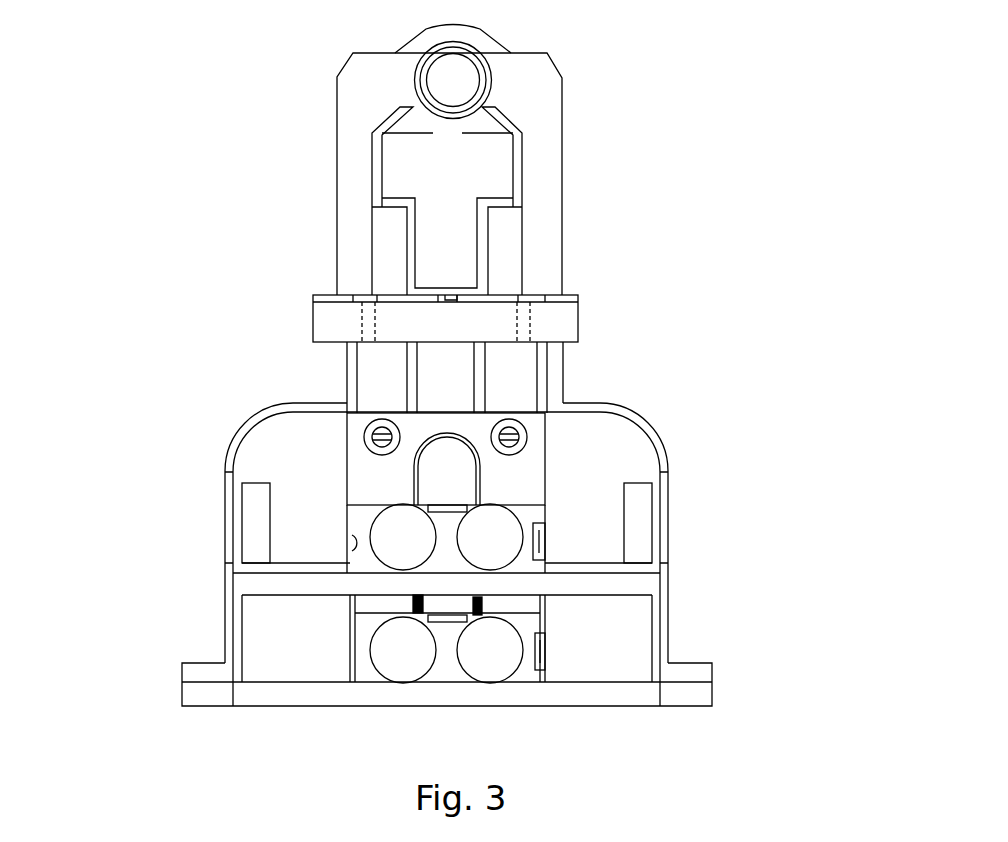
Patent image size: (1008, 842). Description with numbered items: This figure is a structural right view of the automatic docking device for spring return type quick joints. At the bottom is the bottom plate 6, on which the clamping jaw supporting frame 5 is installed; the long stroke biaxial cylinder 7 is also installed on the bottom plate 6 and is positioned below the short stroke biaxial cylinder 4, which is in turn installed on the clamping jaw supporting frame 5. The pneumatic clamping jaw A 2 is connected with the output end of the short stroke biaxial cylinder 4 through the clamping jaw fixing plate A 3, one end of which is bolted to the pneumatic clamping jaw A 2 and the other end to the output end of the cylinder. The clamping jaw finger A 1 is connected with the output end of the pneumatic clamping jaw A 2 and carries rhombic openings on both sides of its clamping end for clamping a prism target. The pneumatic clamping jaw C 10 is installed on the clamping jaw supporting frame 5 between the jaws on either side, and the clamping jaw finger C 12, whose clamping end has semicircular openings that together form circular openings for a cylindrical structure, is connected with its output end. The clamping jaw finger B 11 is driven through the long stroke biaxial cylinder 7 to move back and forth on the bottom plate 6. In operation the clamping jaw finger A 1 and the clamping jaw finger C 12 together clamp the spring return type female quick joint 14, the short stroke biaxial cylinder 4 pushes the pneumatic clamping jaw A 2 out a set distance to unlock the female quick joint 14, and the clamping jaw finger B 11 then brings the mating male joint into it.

The clamping jaw finger A 1 is at (535, 123).
The pneumatic clamping jaw A 2 is at (480, 316).
The clamping jaw fixing plate A 3 is at (500, 473).
The short stroke biaxial cylinder 4 is at (485, 551).
The clamping jaw supporting frame 5 is at (577, 585).
The bottom plate 6 is at (588, 694).
The long stroke biaxial cylinder 7 is at (405, 650).
The pneumatic clamping jaw C 10 is at (482, 272).
The clamping jaw finger B 11 is at (350, 358).
The clamping jaw finger C 12 is at (415, 125).
The female quick joint 14 is at (453, 74).